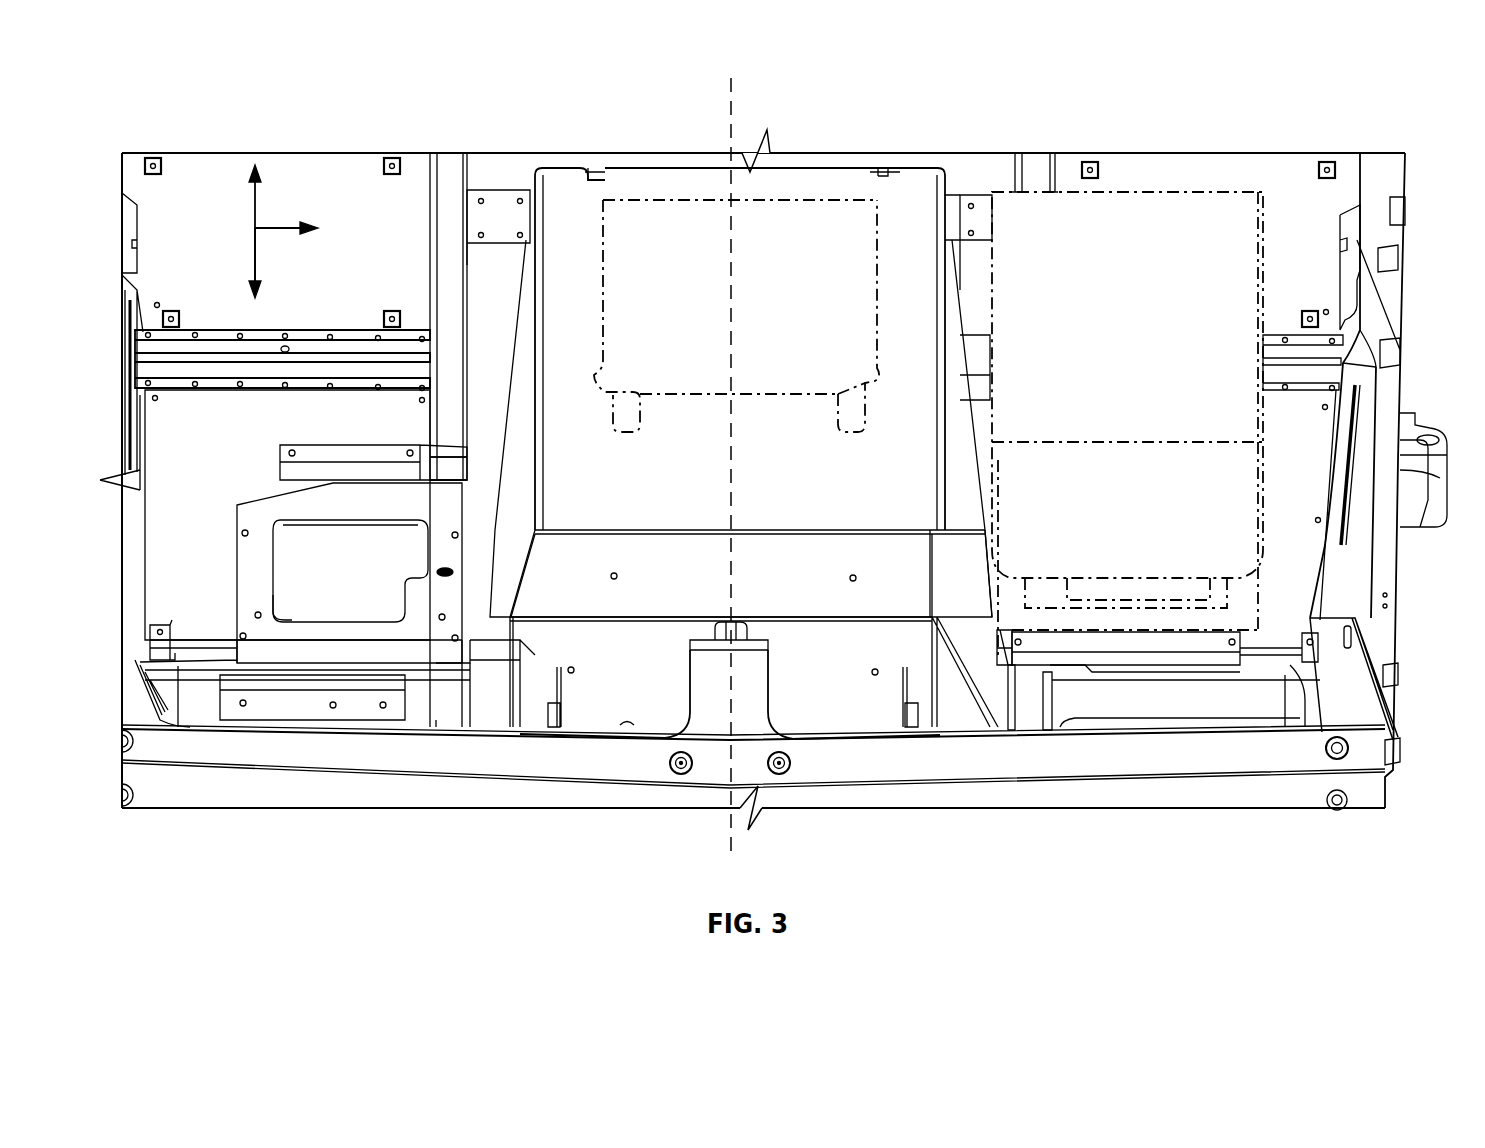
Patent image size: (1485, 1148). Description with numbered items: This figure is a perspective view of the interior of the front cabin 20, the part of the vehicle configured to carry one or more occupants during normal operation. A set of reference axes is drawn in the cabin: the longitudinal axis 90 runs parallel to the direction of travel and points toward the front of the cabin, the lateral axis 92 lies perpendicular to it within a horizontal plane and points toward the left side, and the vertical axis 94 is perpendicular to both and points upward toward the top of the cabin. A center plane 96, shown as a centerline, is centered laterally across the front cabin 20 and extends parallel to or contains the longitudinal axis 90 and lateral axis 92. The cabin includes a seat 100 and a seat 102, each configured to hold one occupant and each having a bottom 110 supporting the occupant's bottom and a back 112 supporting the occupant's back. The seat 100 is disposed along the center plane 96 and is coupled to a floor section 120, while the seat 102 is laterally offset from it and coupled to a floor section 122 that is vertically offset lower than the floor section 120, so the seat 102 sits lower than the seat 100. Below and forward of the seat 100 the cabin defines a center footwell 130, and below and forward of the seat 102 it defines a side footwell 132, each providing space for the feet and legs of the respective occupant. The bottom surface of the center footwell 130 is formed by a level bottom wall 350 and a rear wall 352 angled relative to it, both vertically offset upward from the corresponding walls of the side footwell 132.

The front cabin 20 is at (752, 480).
The longitudinal axis 90 is at (260, 292).
The lateral axis 92 is at (312, 230).
The vertical axis 94 is at (260, 175).
The center plane 96 is at (737, 94).
The seat 100 is at (838, 158).
The seat 102 is at (1219, 188).
The bottom 110 is at (833, 331).
The back 112 is at (640, 170).
The floor section 120 is at (644, 492).
The floor section 122 is at (1315, 423).
The center footwell 130 is at (835, 707).
The side footwell 132 is at (1178, 708).
The bottom wall 350 is at (842, 670).
The rear wall 352 is at (823, 555).